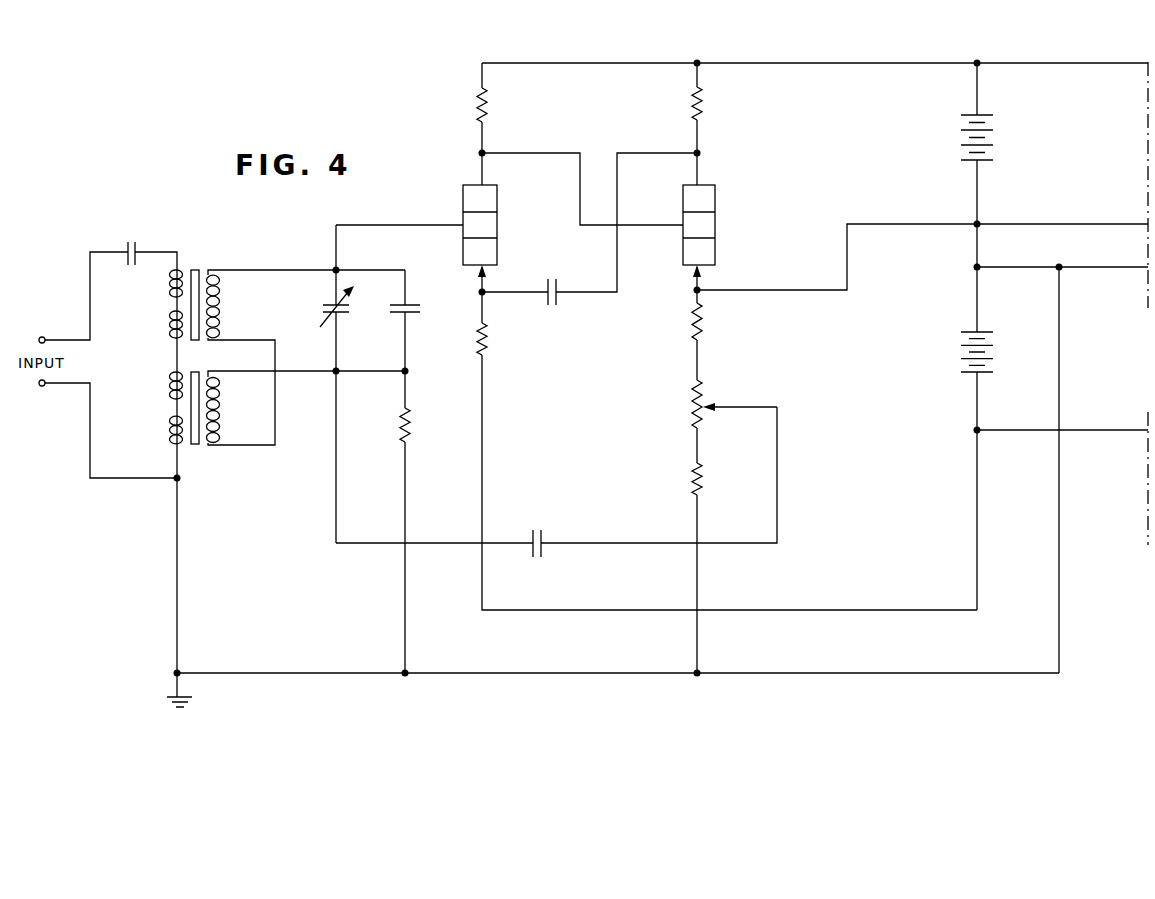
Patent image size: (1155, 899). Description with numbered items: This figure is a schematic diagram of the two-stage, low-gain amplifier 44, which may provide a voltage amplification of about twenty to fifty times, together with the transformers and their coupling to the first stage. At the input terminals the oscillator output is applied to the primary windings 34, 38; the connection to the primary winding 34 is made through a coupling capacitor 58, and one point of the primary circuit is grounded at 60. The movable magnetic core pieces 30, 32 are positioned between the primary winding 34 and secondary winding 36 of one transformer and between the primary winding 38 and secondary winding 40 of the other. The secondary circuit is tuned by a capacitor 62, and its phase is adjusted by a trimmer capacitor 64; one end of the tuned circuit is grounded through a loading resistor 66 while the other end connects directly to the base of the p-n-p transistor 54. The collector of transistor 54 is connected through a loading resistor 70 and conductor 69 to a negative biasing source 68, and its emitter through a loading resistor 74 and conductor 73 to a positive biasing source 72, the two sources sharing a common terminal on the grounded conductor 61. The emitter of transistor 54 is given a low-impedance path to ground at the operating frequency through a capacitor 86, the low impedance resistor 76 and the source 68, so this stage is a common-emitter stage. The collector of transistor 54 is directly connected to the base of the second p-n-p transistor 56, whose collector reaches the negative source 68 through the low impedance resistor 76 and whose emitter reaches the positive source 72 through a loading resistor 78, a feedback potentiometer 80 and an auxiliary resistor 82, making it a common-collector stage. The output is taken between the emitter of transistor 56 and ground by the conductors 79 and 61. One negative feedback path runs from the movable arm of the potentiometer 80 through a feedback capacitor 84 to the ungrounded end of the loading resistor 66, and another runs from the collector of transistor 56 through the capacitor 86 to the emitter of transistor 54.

The movable magnetic core piece 30 is at (196, 266).
The movable magnetic core piece 32 is at (198, 449).
The primary winding 34 is at (170, 308).
The secondary winding 36 is at (220, 310).
The primary winding 38 is at (170, 410).
The secondary winding 40 is at (220, 412).
The two-stage amplifier 44 is at (484, 680).
The transistor 54 is at (460, 195).
The transistor 56 is at (717, 203).
The coupling capacitor 58 is at (130, 238).
The ground 60 is at (193, 704).
The grounded conductor 61 is at (1112, 268).
The capacitor 62 is at (417, 310).
The trimmer capacitor 64 is at (326, 311).
The loading resistor 66 is at (400, 420).
The negative biasing source 68 is at (996, 141).
The conductor 69 is at (545, 62).
The loading resistor 70 is at (475, 107).
The positive biasing source 72 is at (966, 351).
The conductor 73 is at (1116, 434).
The loading resistor 74 is at (490, 332).
The low impedance resistor 76 is at (705, 110).
The loading resistor 78 is at (692, 325).
The conductor 79 is at (1060, 222).
The feedback potentiometer 80 is at (690, 400).
The auxiliary resistor 82 is at (690, 478).
The feedback capacitor 84 is at (540, 526).
The capacitor 86 is at (552, 276).